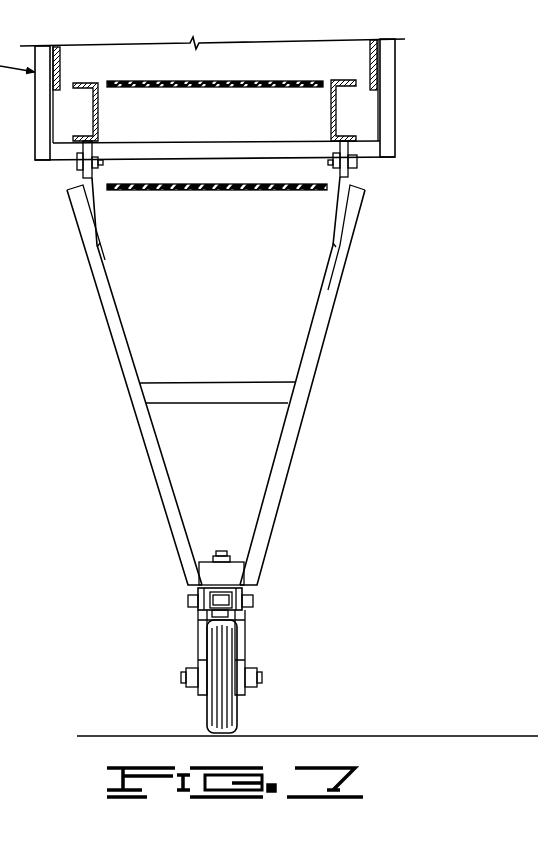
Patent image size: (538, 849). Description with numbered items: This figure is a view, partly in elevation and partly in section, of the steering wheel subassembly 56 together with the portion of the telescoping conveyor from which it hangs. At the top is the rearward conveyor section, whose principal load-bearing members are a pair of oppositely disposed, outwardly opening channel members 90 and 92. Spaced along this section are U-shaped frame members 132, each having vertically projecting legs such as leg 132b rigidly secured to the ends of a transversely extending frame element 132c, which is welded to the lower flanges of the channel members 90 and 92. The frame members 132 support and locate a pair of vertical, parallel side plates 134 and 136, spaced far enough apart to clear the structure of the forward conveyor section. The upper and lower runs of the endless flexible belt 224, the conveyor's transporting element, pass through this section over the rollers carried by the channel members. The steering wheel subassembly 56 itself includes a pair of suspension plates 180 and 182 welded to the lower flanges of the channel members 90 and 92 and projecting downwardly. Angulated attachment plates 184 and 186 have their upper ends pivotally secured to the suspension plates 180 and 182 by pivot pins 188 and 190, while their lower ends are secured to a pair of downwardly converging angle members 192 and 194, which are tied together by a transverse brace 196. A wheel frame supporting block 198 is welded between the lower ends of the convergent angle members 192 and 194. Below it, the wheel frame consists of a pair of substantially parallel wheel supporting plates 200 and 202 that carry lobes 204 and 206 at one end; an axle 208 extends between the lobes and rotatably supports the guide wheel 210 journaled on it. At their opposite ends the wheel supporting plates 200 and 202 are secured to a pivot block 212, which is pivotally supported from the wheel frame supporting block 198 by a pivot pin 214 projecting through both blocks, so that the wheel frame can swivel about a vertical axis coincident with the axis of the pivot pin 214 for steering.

The steering wheel subassembly 56 is at (319, 368).
The channel member 90 is at (98, 60).
The channel member 92 is at (346, 78).
The U-shaped frame member 132 is at (432, 18).
The vertically projecting leg 132b is at (385, 97).
The transversely extending frame element 132c is at (217, 147).
The side plate 134 is at (58, 50).
The side plate 136 is at (368, 47).
The suspension plate 180 is at (95, 146).
The suspension plate 182 is at (335, 145).
The angulated attachment plate 184 is at (78, 179).
The angulated attachment plate 186 is at (352, 176).
The pivot pin 188 is at (100, 162).
The pivot pin 190 is at (330, 162).
The angle member 192 is at (103, 293).
The angle member 194 is at (325, 295).
The transverse brace 196 is at (220, 388).
The wheel frame supporting block 198 is at (227, 577).
The wheel supporting plate 200 is at (198, 621).
The wheel supporting plate 202 is at (246, 620).
The lobe 204 is at (198, 648).
The lobe 206 is at (246, 648).
The axle 208 is at (258, 677).
The guide wheel 210 is at (235, 722).
The pivot block 212 is at (242, 598).
The pivot pin 214 is at (213, 558).
The endless flexible belt 224 is at (178, 83).